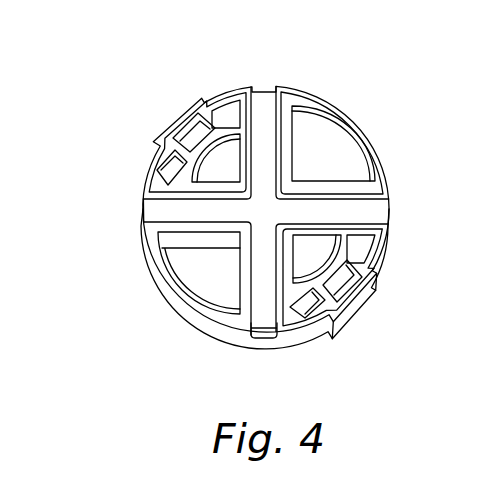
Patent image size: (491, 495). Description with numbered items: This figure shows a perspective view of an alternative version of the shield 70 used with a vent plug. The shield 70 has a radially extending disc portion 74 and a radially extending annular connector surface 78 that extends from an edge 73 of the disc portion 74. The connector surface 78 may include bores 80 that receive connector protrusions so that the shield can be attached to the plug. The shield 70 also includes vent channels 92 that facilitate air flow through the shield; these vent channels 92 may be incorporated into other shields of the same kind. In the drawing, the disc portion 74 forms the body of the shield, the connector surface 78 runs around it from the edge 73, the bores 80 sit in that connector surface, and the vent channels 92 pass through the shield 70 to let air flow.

The shield 70 is at (100, 92).
The edge of the disc portion 73 is at (310, 110).
The disc portion 74 is at (343, 133).
The annular connector surface 78 is at (380, 150).
The bores 80 is at (380, 266).
The vent channels 92 is at (150, 216).